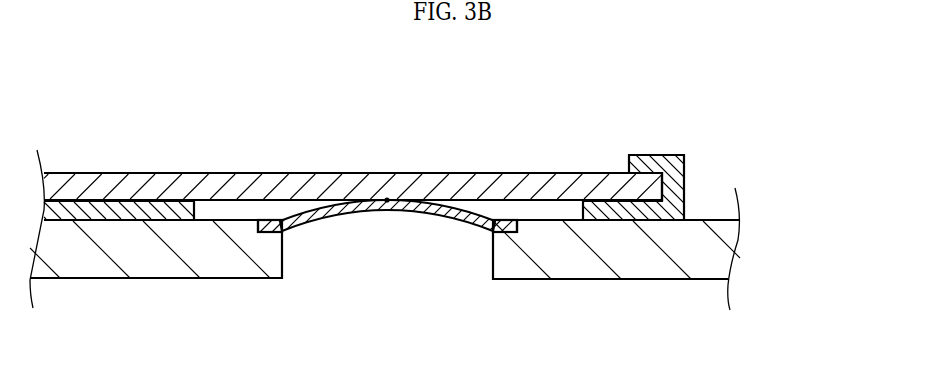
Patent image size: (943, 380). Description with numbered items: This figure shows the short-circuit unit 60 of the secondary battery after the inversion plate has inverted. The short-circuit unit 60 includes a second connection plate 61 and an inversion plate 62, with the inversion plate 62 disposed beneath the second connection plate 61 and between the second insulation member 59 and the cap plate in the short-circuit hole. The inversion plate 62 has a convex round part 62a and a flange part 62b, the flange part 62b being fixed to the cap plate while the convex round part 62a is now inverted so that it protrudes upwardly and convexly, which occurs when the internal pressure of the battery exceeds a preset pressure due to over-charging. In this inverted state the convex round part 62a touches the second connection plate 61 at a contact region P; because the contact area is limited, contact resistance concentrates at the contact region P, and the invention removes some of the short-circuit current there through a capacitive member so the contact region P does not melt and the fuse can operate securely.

The short-circuit unit 60 is at (330, 122).
The second connection plate 61 is at (213, 180).
The contact region P is at (387, 200).
The second insulation member 59 is at (660, 162).
The inversion plate 62 is at (380, 272).
The convex round part 62a is at (443, 222).
The flange part 62b is at (318, 224).